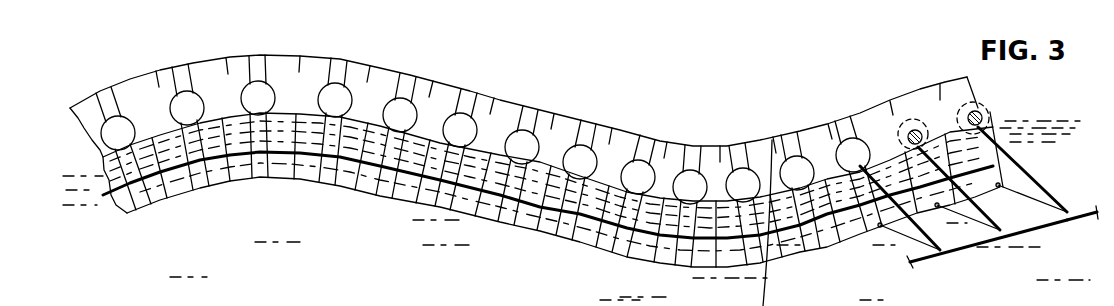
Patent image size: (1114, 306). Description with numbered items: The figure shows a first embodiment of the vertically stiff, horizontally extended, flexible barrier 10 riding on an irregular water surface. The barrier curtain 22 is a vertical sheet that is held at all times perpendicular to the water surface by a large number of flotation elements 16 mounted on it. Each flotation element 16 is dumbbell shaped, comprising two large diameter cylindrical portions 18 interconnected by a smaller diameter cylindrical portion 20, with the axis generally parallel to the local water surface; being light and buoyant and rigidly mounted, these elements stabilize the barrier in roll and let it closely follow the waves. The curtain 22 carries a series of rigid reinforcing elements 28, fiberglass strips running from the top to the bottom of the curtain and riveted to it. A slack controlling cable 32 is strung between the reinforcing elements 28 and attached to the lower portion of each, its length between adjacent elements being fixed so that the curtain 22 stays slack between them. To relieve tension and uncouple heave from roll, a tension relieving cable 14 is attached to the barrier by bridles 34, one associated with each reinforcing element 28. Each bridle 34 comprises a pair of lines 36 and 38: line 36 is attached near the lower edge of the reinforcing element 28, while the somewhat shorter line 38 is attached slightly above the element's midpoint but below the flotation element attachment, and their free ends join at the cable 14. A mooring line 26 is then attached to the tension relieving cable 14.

The flexible barrier 10 is at (708, 85).
The tension relieving cable 14 is at (923, 258).
The flotation element 16 is at (205, 92).
The large diameter cylindrical portion 18 is at (128, 122).
The smaller diameter cylindrical portion 20 is at (908, 133).
The barrier curtain 22 is at (368, 78).
The mooring line 26 is at (1080, 218).
The reinforcing element 28 is at (333, 60).
The slack controlling cable 32 is at (103, 196).
The bridle 34 is at (1040, 182).
The line 36 is at (1007, 191).
The line 38 is at (1028, 170).